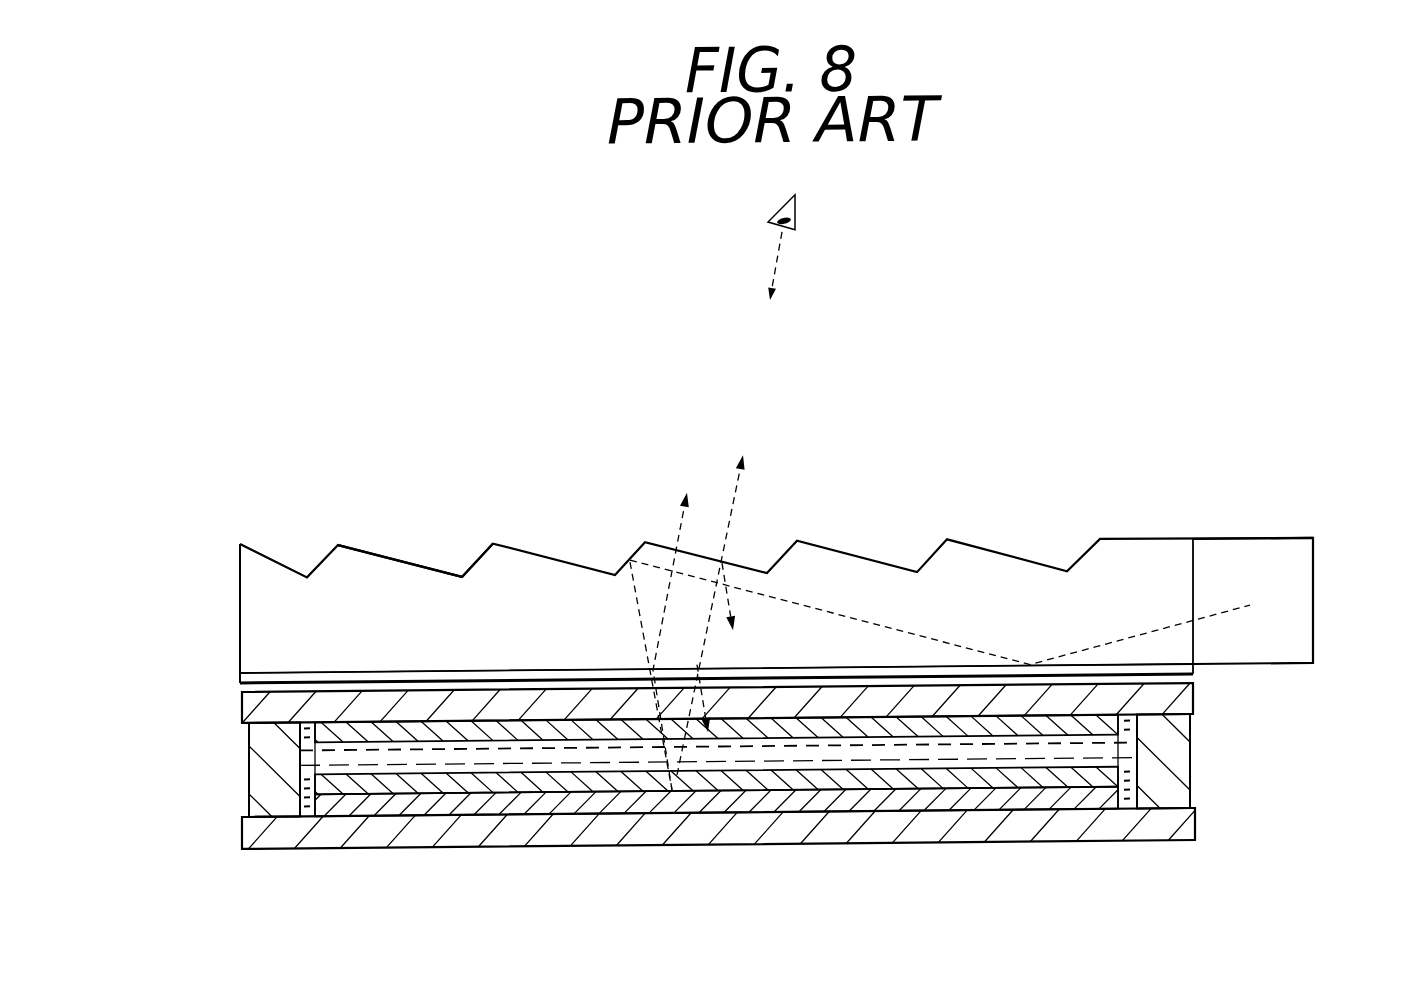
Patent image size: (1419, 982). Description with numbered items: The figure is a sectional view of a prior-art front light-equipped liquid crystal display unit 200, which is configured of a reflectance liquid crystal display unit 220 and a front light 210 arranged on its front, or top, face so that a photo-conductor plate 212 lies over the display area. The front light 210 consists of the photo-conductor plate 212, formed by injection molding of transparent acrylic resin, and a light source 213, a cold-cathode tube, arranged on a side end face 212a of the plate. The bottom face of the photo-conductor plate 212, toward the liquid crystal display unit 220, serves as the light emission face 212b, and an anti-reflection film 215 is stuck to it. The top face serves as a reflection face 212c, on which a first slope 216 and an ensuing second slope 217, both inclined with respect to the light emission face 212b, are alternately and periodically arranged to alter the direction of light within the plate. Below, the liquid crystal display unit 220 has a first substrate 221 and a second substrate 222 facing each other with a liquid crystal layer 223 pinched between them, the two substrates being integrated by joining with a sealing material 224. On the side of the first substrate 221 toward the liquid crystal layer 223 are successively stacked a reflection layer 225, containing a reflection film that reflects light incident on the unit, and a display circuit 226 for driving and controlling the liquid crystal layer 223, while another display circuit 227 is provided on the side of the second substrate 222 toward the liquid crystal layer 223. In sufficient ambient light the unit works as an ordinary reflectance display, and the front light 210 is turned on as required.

The liquid crystal display unit 200 is at (1255, 342).
The front light 210 is at (1315, 615).
The photo-conductor plate 212 is at (255, 653).
The side end face 212a is at (1195, 601).
The light emission face 212b is at (298, 671).
The reflection face 212c is at (967, 552).
The light source 213 is at (1278, 572).
The anti-reflection film 215 is at (332, 671).
The first slope 216 is at (480, 560).
The second slope 217 is at (385, 553).
The liquid crystal display unit 220 is at (1197, 827).
The first substrate 221 is at (263, 828).
The second substrate 222 is at (260, 709).
The liquid crystal layer 223 is at (1128, 760).
The sealing material 224 is at (1173, 797).
The reflection layer 225 is at (1095, 810).
The display circuit 226 is at (1050, 786).
The display circuit 227 is at (988, 734).